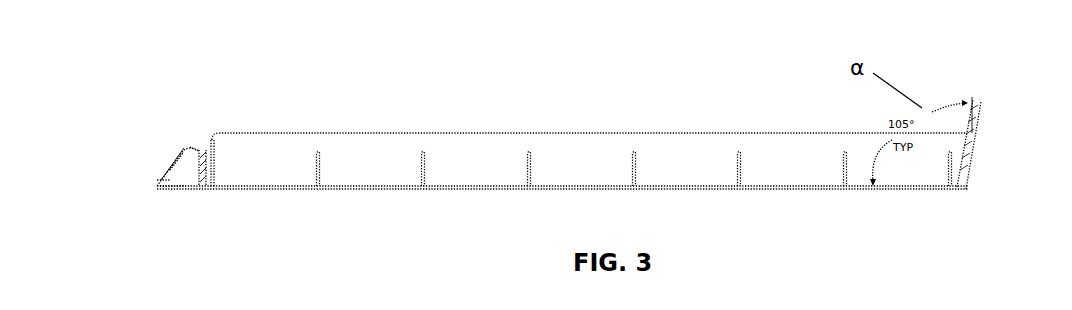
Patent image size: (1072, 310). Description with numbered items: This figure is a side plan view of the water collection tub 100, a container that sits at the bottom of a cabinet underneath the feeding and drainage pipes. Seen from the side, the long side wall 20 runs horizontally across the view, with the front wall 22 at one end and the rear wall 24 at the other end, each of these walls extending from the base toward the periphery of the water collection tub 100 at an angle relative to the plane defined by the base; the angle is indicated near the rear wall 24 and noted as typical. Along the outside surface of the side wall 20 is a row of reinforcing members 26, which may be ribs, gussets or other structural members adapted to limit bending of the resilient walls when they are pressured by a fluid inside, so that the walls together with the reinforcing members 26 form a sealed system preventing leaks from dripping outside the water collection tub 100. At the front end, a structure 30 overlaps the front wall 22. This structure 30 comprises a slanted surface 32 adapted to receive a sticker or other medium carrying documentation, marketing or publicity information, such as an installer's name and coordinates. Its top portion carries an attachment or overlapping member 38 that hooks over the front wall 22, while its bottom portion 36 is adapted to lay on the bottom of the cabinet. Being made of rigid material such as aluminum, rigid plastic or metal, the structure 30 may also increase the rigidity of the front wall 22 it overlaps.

The water collection tub 100 is at (497, 119).
The side wall 20 is at (569, 171).
The front wall 22 is at (210, 185).
The rear wall 24 is at (962, 175).
The reinforcing member 26 is at (422, 180).
The structure 30 is at (166, 158).
The slanted surface 32 is at (181, 157).
The bottom portion 36 is at (178, 183).
The overlapping member 38 is at (199, 160).